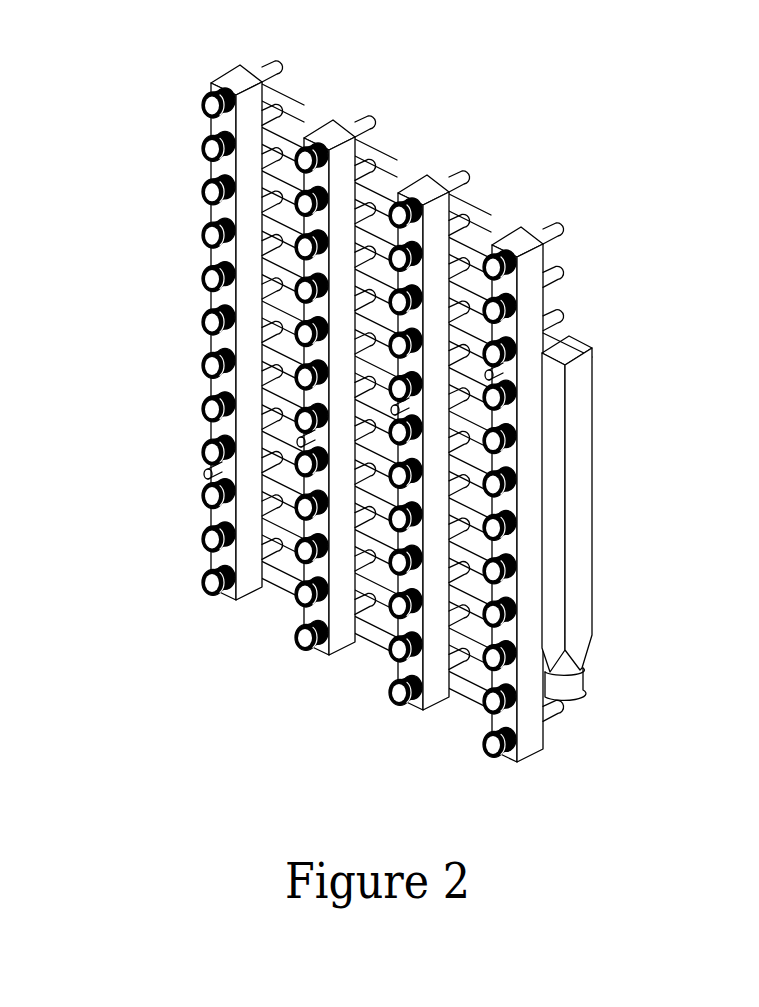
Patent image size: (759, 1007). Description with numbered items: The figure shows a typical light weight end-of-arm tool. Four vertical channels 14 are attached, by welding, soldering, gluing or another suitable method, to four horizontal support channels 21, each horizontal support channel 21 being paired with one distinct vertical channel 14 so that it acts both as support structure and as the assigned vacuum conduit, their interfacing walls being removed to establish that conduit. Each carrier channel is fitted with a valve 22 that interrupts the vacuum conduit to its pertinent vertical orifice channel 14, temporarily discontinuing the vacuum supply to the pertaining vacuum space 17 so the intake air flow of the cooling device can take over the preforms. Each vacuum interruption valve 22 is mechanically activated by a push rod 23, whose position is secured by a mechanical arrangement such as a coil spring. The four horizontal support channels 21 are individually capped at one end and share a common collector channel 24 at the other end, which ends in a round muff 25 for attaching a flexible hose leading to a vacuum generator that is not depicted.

The vertical channel 14 is at (437, 213).
The vacuum space 17 is at (520, 248).
The horizontal support channel 21 is at (381, 238).
The valve 22 is at (523, 367).
The push rod 23 is at (207, 474).
The collector channel 24 is at (575, 585).
The round muff 25 is at (572, 685).